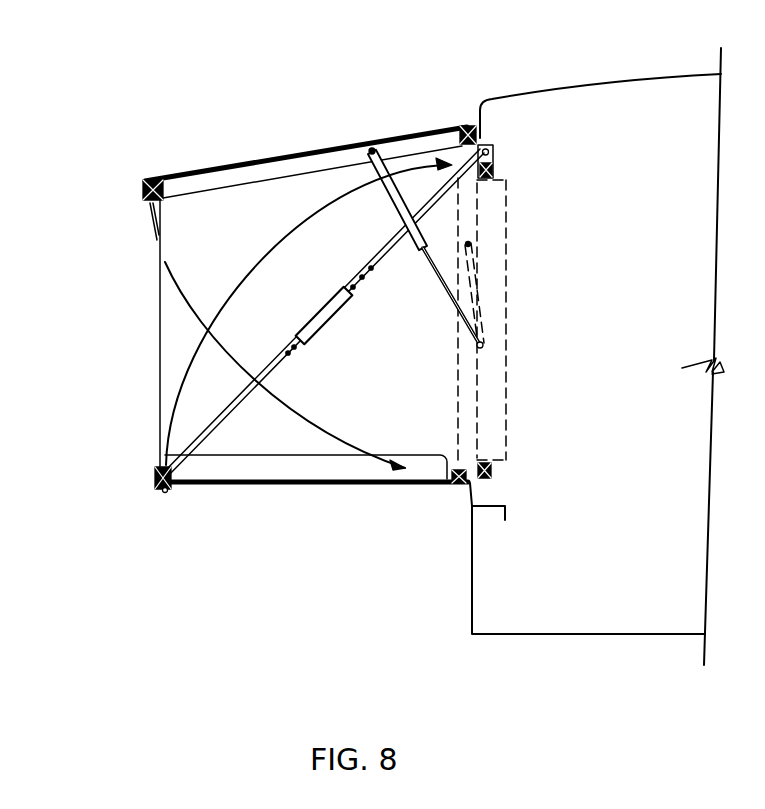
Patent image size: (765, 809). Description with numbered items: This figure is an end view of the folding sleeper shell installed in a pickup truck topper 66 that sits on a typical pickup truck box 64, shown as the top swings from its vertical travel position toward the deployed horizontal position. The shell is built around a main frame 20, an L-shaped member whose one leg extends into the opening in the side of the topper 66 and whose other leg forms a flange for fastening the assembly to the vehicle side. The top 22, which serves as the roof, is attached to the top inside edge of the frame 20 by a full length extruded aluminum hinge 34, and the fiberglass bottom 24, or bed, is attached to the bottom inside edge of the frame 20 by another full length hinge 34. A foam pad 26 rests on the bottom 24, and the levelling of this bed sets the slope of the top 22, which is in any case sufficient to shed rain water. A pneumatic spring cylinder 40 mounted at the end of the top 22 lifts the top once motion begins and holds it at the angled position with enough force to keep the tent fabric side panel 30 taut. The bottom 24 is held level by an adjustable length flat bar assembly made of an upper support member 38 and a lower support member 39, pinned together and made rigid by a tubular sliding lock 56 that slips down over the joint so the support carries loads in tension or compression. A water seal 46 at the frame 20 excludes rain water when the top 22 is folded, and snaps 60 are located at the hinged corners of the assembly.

The main frame 20 is at (470, 212).
The top 22 is at (318, 150).
The bottom 24 is at (413, 485).
The foam pad 26 is at (390, 453).
The side panel 30 is at (160, 302).
The hinge 34 is at (478, 138).
The upper support member 38 is at (371, 275).
The lower support member 39 is at (218, 433).
The spring cylinder 40 is at (385, 165).
The water seal 46 is at (152, 205).
The sliding lock 56 is at (316, 340).
The snaps 60 is at (158, 183).
The pickup truck box 64 is at (570, 635).
The pickup truck topper 66 is at (660, 74).